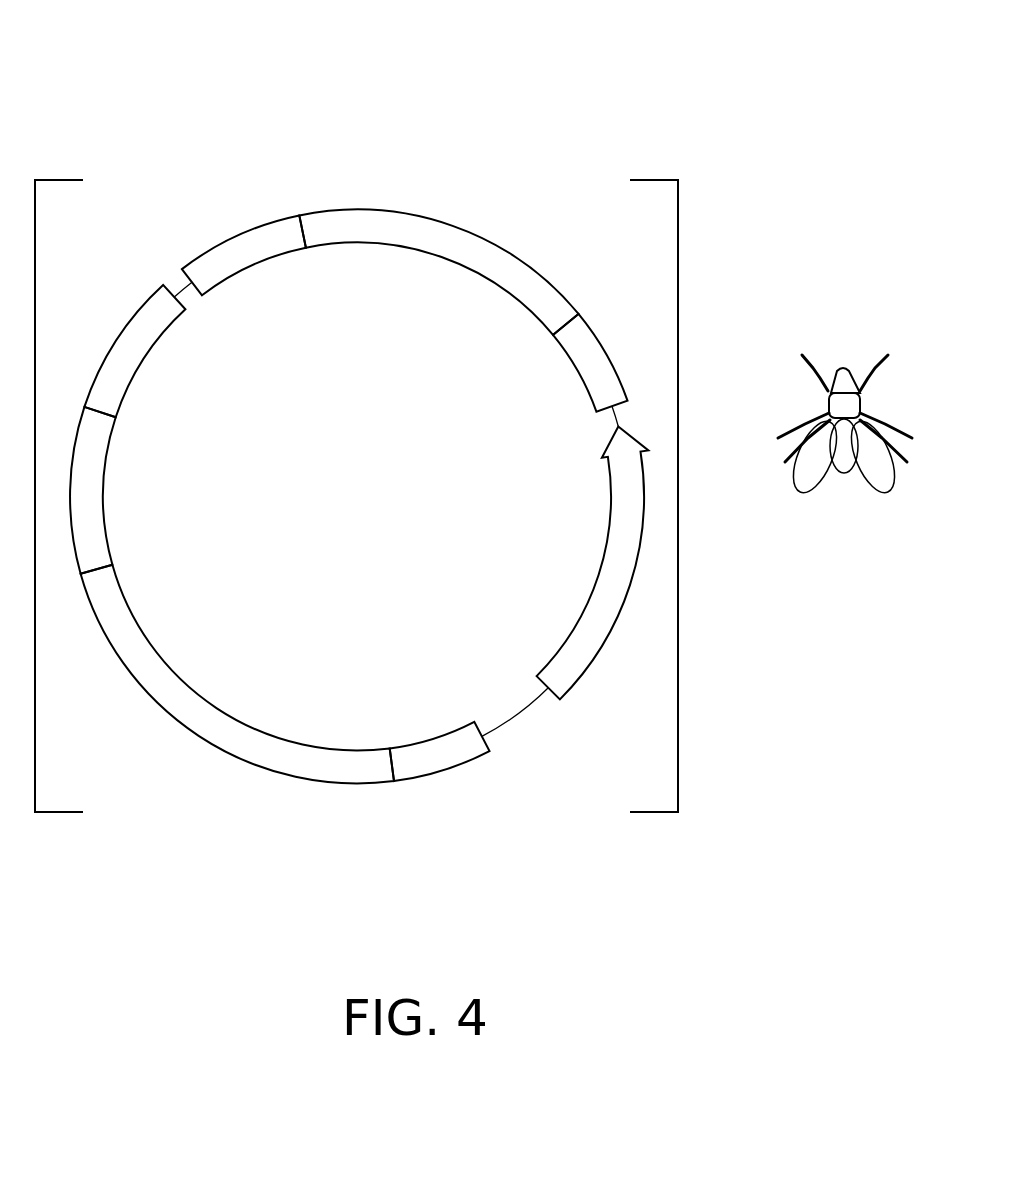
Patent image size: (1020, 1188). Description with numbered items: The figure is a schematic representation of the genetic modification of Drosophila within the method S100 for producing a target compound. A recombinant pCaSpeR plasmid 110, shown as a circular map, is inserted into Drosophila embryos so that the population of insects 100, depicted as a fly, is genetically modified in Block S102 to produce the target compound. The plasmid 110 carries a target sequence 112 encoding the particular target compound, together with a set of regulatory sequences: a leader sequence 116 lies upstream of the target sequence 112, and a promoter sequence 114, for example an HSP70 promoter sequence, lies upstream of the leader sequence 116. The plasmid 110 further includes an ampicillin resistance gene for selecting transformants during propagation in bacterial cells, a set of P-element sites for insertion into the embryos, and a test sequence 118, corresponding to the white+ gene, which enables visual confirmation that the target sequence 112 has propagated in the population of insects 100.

The population of insects 100 is at (813, 495).
The plasmid 110 is at (414, 516).
The target sequence 112 is at (245, 758).
The promoter sequence 114 is at (142, 313).
The leader sequence 116 is at (110, 478).
The test sequence 118 is at (592, 635).
The method S100 is at (772, 116).
The block of genetically modifying the population of insects S102 is at (740, 447).